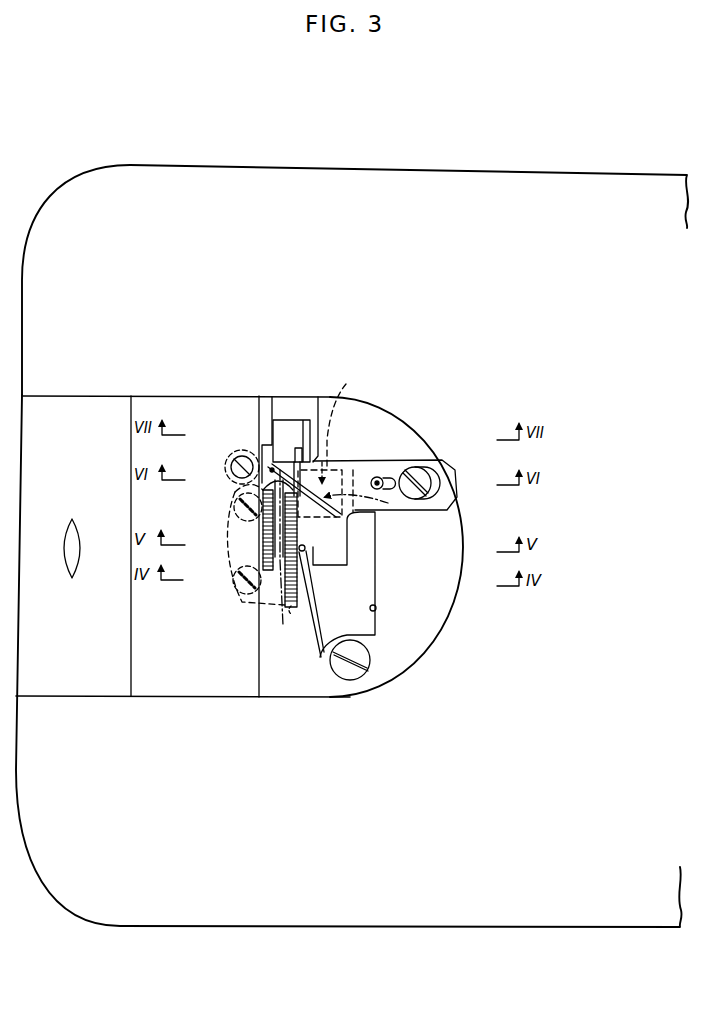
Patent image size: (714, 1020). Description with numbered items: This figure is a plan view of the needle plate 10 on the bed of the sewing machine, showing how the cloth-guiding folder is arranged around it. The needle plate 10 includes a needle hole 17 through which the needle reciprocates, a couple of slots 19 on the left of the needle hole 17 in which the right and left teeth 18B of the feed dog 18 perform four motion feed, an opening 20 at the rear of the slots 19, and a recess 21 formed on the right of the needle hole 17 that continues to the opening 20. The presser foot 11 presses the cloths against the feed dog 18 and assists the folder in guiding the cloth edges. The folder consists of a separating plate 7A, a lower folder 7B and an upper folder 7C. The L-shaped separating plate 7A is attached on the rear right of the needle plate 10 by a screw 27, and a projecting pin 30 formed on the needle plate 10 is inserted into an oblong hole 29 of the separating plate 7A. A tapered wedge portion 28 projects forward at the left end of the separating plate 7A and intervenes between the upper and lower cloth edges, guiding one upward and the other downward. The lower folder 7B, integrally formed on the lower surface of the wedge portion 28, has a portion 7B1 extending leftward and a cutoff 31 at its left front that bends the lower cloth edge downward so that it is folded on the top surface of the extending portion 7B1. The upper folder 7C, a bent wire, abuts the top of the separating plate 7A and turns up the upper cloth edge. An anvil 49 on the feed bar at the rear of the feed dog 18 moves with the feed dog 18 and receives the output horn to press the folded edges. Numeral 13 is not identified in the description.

The camera body 13 is at (520, 926).
The needle plate 10 is at (427, 641).
The opening 20 is at (272, 397).
The anvil 49 is at (282, 432).
The extending portion 7B1 is at (292, 448).
The lower folder 7B is at (350, 436).
The separating plate 7A is at (405, 452).
The projecting pin 30 is at (379, 476).
The screw 27 is at (425, 476).
The oblong hole 29 is at (441, 500).
The upper folder 7C is at (388, 503).
The cutoff 31 is at (300, 507).
The wedge portion 28 is at (343, 558).
The recess 21 is at (377, 612).
The needle hole 17 is at (304, 556).
The teeth 18B is at (262, 537).
The feed dog 18 is at (234, 574).
The slots 19 is at (254, 598).
The presser foot 11 is at (283, 625).